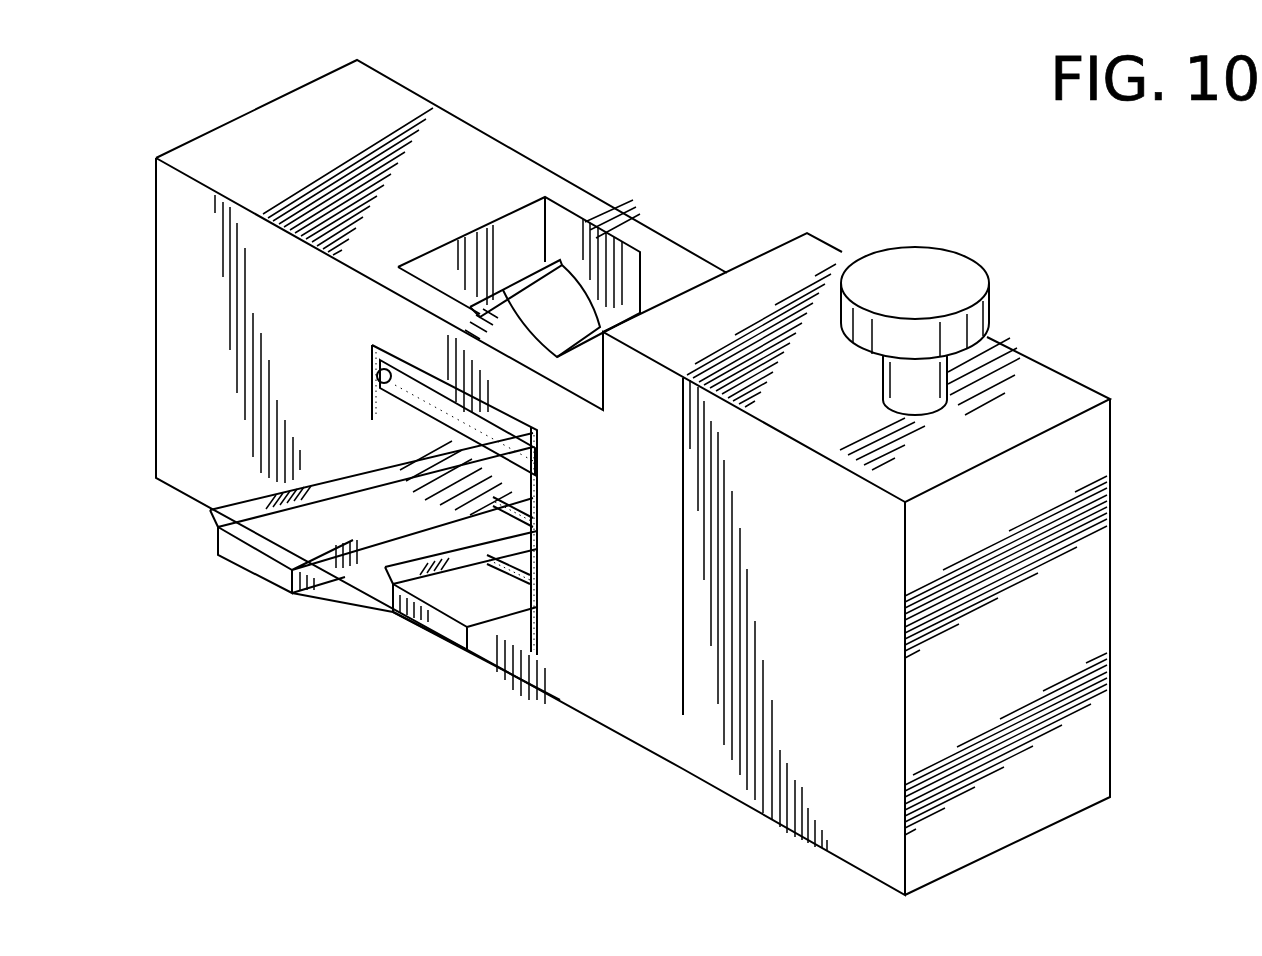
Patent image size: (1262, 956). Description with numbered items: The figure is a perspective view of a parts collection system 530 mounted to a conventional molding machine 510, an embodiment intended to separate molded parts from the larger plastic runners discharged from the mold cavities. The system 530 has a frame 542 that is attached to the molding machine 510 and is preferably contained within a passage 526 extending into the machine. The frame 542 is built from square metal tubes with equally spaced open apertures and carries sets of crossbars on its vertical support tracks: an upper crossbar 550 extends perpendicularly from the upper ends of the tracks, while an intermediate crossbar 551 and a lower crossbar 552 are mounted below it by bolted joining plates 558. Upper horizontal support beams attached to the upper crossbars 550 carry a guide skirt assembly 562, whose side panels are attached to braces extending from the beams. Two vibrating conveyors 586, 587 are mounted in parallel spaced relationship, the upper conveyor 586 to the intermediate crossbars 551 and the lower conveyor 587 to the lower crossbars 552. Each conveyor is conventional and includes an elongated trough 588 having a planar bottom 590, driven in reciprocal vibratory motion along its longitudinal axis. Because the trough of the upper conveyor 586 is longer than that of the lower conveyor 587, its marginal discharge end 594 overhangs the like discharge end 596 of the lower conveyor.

The molding machine 510 is at (887, 178).
The passage 526 is at (505, 625).
The parts collection system 530 is at (409, 507).
The frame 542 is at (540, 484).
The upper crossbar 550 is at (393, 362).
The intermediate crossbar 551 is at (536, 500).
The lower crossbar 552 is at (532, 553).
The bolted joining plate 558 is at (537, 597).
The guide skirt assembly 562 is at (512, 268).
The upper vibrating conveyor 586 is at (243, 490).
The lower vibrating conveyor 587 is at (345, 585).
The elongated trough 588 is at (322, 472).
The planar bottom 590 is at (404, 557).
The marginal discharge end 594 is at (245, 558).
The discharge end 596 is at (383, 598).